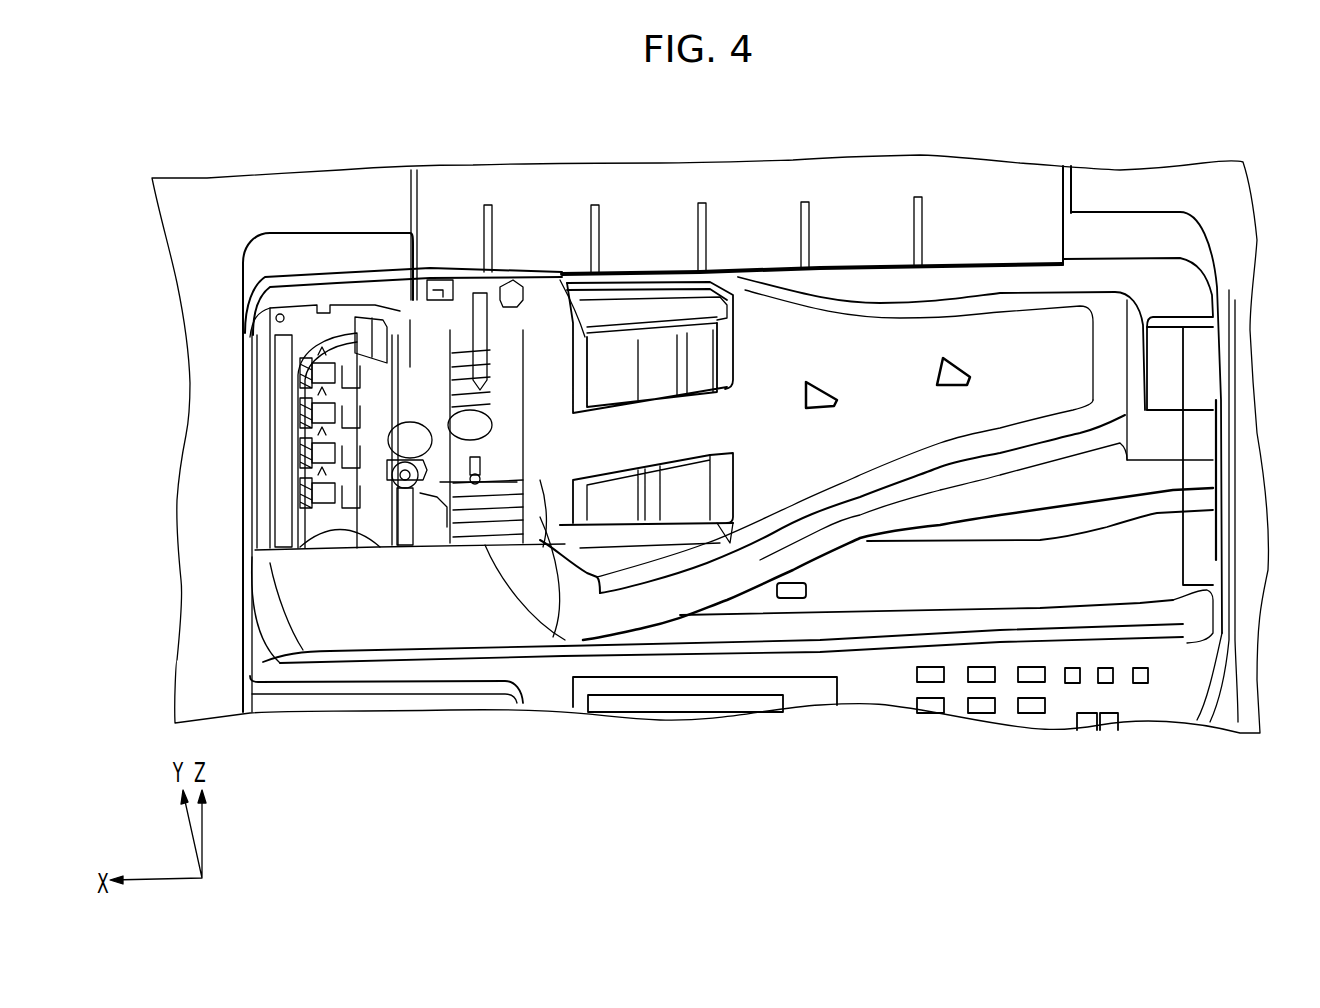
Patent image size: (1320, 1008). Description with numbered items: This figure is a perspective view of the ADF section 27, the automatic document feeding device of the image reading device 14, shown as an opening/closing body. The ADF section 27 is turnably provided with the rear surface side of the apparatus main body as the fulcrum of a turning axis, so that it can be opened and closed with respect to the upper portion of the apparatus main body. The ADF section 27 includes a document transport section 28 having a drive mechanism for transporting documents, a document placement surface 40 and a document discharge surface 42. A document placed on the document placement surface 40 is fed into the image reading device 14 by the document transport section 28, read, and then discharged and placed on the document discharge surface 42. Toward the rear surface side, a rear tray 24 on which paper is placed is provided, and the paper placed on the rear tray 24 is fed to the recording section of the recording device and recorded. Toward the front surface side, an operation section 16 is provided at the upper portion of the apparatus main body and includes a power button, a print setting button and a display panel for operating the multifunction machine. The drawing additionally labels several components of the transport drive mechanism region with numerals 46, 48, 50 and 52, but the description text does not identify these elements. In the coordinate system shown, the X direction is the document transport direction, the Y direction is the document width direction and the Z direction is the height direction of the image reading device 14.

The image reading device 14 is at (307, 233).
The ADF section 27 is at (307, 228).
The rear tray 24 is at (640, 197).
The document placement surface 40 is at (997, 335).
The document discharge surface 42 is at (1113, 472).
The operation section 16 is at (858, 688).
The document transport section 28 is at (565, 527).
The lever block 48 is at (434, 395).
The clip bracket 46 is at (487, 322).
The roller 50 is at (385, 520).
The connectors 52 is at (300, 478).